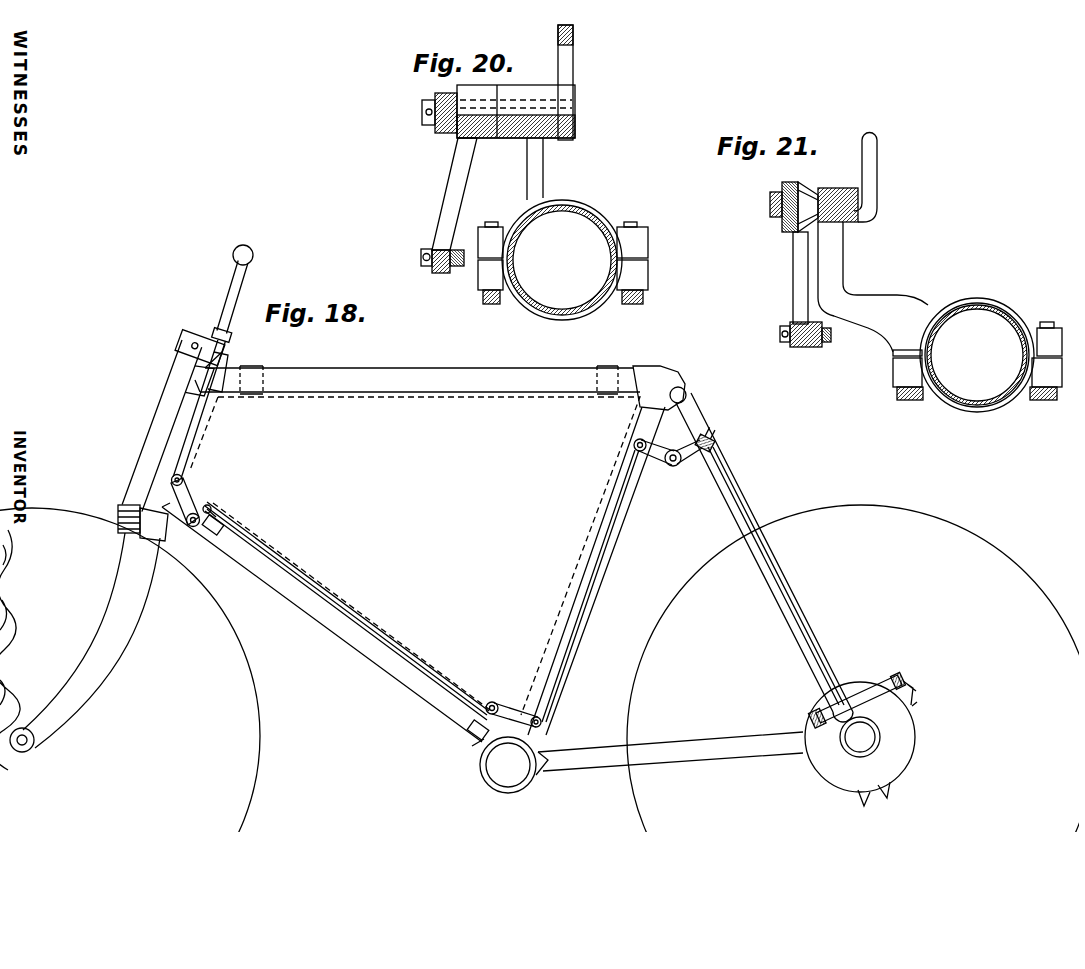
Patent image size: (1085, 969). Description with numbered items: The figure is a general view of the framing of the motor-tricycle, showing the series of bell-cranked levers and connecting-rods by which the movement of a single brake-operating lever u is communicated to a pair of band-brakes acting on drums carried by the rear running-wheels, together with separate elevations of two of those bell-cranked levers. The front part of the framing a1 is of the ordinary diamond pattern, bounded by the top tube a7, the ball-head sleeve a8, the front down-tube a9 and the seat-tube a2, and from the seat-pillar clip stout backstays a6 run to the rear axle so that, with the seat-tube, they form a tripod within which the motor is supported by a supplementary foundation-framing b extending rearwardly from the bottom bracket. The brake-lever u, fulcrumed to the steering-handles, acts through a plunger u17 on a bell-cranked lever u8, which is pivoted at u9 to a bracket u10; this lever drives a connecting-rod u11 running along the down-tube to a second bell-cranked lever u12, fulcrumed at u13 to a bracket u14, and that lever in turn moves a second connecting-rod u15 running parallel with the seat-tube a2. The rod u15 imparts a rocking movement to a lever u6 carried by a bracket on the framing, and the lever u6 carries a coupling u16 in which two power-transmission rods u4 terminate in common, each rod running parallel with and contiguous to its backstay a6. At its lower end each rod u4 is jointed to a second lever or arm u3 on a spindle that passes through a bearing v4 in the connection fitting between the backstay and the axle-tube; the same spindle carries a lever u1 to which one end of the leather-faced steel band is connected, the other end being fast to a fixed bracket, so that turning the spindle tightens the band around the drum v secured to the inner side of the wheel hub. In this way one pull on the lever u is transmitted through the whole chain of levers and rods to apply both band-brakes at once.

In FIG. 18, the brake-operating lever u is at (245, 272).
In FIG. 18, the front part of the framing a1 is at (417, 361).
In FIG. 18, the ball-head sleeve a8 is at (180, 430).
In FIG. 18, the plunger u17 is at (192, 428).
In FIG. 18, the bell-cranked lever u8 is at (200, 497).
In FIG. 20, the bell-cranked lever u8 is at (568, 67).
In FIG. 18, the top tube a7 is at (427, 392).
In FIG. 18, the front down-tube a9 is at (336, 634).
In FIG. 20, the front down-tube a9 is at (517, 252).
In FIG. 21, the front down-tube a9 is at (930, 346).
In FIG. 18, the connecting-rod u11 is at (338, 611).
In FIG. 21, the connecting-rod u11 is at (828, 336).
In FIG. 18, the second bell-cranked lever u12 is at (488, 702).
In FIG. 21, the second bell-cranked lever u12 is at (800, 250).
In FIG. 18, the seat-tube a2 is at (612, 548).
In FIG. 18, the second connecting-rod u15 is at (592, 585).
In FIG. 21, the second connecting-rod u15 is at (873, 167).
In FIG. 18, the lever u6 is at (692, 460).
In FIG. 18, the coupling u16 is at (714, 443).
In FIG. 18, the backstays a6 is at (786, 622).
In FIG. 18, the power-transmission rod u4 is at (797, 607).
In FIG. 18, the supplementary foundation-framing b is at (682, 738).
In FIG. 18, the drum v is at (908, 745).
In FIG. 18, the bearing v4 is at (876, 693).
In FIG. 18, the lever u1 is at (903, 690).
In FIG. 18, the second lever or arm u3 is at (830, 727).
In FIG. 20, the pivot u9 is at (431, 128).
In FIG. 20, the bracket u10 is at (590, 178).
In FIG. 21, the fulcrum u13 is at (761, 207).
In FIG. 21, the bracket u14 is at (893, 290).